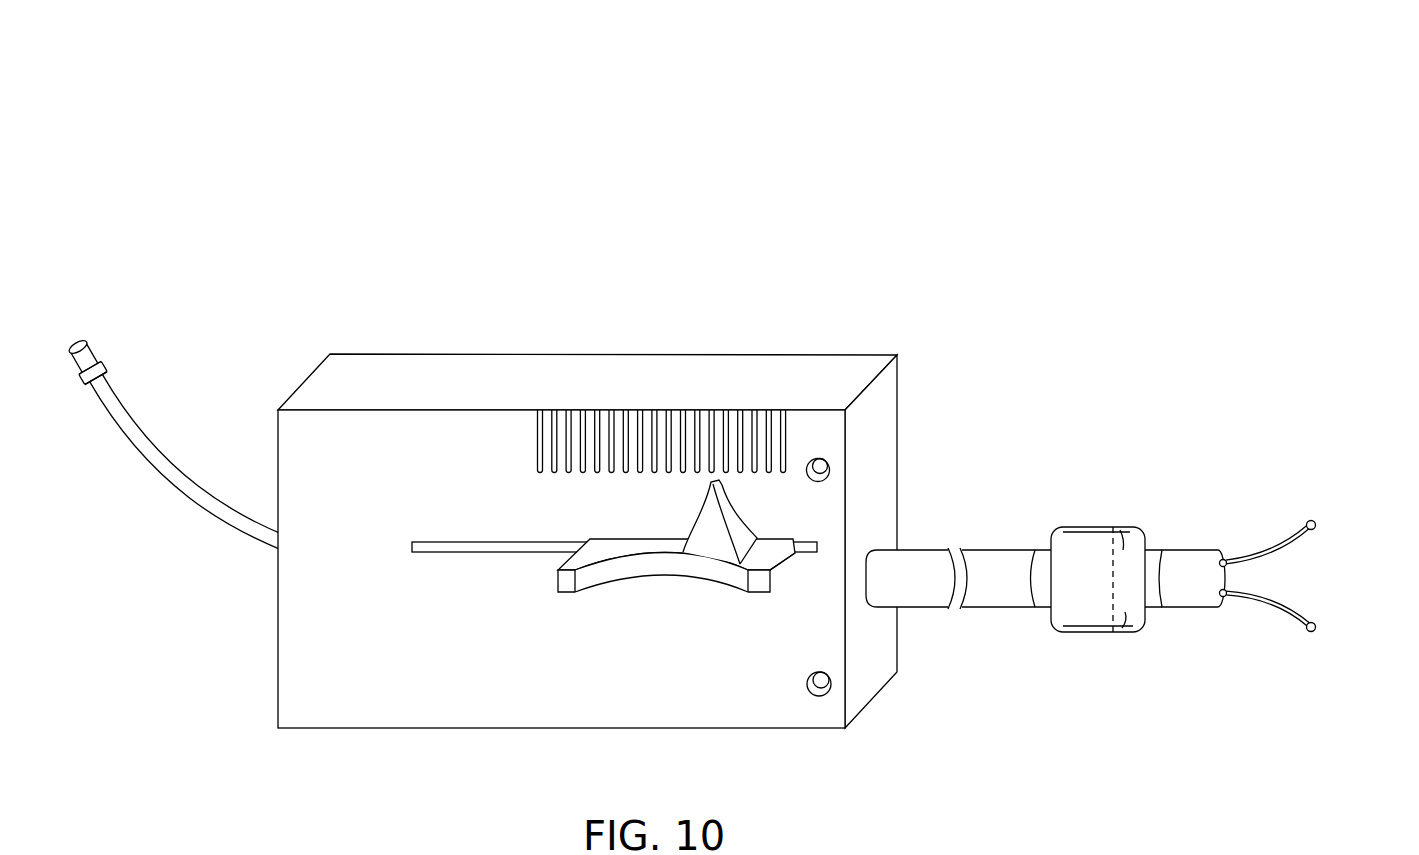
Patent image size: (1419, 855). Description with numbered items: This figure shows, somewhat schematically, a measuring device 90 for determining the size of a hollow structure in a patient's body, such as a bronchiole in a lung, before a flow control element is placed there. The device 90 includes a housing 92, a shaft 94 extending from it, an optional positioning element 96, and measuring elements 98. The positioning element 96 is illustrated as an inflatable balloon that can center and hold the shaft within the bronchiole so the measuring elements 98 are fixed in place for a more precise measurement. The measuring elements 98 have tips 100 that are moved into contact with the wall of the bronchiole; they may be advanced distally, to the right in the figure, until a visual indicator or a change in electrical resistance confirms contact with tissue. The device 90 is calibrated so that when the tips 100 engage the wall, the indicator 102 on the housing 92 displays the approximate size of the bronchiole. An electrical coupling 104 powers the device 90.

The measuring device 90 is at (570, 140).
The housing 92 is at (358, 710).
The shaft 94 is at (1006, 557).
The positioning element 96 is at (1100, 540).
The measuring elements 98 is at (1258, 600).
The tips 100 is at (1314, 632).
The indicator 102 is at (683, 563).
The electrical coupling 104 is at (157, 468).